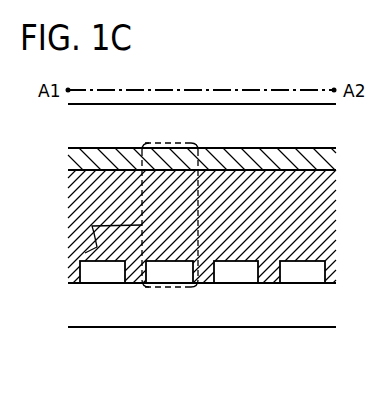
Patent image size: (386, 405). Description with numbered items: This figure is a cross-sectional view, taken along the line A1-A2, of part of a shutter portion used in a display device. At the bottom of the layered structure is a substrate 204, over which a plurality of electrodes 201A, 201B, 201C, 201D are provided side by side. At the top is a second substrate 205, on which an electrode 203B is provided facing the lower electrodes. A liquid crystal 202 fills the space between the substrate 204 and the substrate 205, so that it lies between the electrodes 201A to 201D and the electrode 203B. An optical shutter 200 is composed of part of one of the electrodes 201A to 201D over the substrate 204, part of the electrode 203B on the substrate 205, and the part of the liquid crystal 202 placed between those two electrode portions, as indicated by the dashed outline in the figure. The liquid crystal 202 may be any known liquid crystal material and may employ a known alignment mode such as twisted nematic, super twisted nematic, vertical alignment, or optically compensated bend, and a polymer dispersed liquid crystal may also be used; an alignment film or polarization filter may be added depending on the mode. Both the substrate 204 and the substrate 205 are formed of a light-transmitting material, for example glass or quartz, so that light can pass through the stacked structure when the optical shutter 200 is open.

The substrate 205 is at (75, 125).
The electrode 203B is at (75, 161).
The liquid crystal 202 is at (75, 210).
The optical shutter 200 is at (85, 253).
The substrate 204 is at (75, 302).
The electrode 201A is at (102, 273).
The electrode 201B is at (168, 273).
The electrode 201C is at (235, 273).
The electrode 201D is at (301, 273).